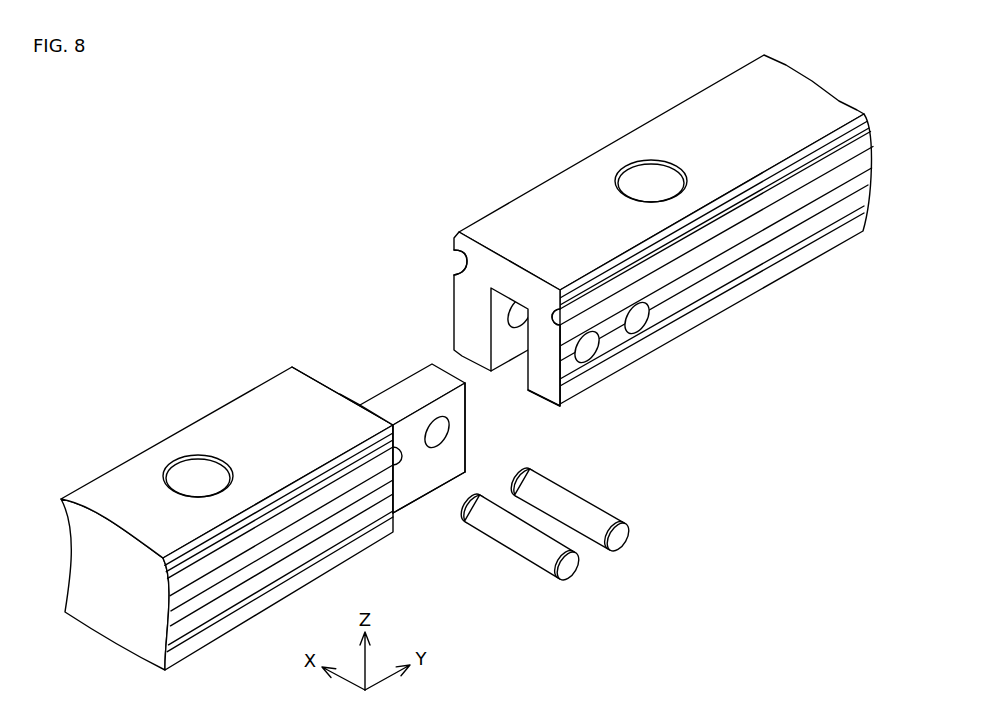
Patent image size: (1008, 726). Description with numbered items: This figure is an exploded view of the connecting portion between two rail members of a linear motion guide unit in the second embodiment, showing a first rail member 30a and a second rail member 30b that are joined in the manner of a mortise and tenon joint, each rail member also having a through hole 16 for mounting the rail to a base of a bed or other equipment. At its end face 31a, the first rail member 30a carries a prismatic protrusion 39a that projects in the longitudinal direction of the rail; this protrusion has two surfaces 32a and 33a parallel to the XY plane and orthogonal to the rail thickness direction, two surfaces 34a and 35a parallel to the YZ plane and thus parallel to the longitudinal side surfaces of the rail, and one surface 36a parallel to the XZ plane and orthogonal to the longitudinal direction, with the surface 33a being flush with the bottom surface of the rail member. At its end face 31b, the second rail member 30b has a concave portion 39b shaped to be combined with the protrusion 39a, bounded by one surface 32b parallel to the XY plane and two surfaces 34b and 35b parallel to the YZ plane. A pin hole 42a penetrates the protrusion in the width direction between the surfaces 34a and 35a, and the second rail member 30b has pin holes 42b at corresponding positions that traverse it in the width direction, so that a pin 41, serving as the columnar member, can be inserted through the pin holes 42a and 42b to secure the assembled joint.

The through hole 16 is at (645, 178).
The first rail member 30a is at (291, 445).
The second rail member 30b is at (772, 137).
The end face 31a is at (322, 384).
The end face 31b is at (462, 258).
The surface 32a is at (403, 390).
The surface 32b is at (490, 296).
The surface 33a is at (422, 487).
The surface 34a is at (460, 450).
The surface 34b is at (553, 385).
The surface 35a is at (357, 400).
The surface 35b is at (466, 322).
The surface 36a is at (470, 423).
The prismatic protrusion 39a is at (400, 487).
The concave portion 39b is at (515, 366).
The pin 41 is at (622, 540).
The pin hole 42a is at (437, 415).
The pin holes 42b is at (640, 318).